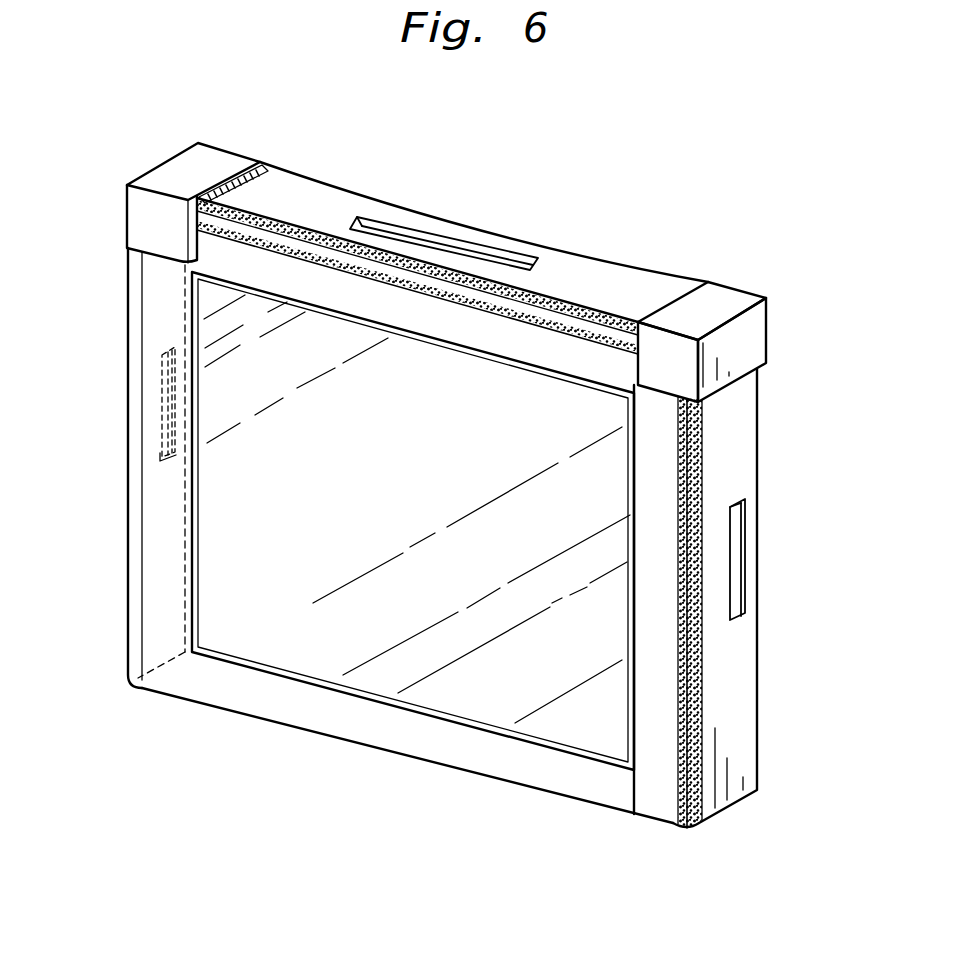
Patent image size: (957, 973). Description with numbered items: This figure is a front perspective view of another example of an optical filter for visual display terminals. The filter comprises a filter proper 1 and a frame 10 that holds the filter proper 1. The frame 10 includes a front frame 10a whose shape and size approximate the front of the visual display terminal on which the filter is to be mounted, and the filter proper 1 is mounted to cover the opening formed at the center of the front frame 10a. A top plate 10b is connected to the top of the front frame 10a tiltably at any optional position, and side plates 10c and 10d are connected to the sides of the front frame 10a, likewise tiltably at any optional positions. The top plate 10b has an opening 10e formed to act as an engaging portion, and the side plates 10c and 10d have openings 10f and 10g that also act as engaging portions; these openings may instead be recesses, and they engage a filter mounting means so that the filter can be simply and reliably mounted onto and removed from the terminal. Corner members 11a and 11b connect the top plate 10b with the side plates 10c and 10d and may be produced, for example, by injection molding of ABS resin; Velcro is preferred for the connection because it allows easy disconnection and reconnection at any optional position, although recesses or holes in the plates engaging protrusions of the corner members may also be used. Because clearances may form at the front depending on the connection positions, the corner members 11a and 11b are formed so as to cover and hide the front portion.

The filter proper 1 is at (290, 630).
The frame 10 is at (672, 233).
The front frame 10a is at (377, 725).
The top plate 10b is at (310, 212).
The side plate 10c is at (166, 316).
The side plate 10d is at (744, 457).
The opening 10e is at (455, 248).
The opening 10f is at (160, 413).
The opening 10g is at (742, 560).
The corner member 11a is at (185, 175).
The corner member 11b is at (753, 342).